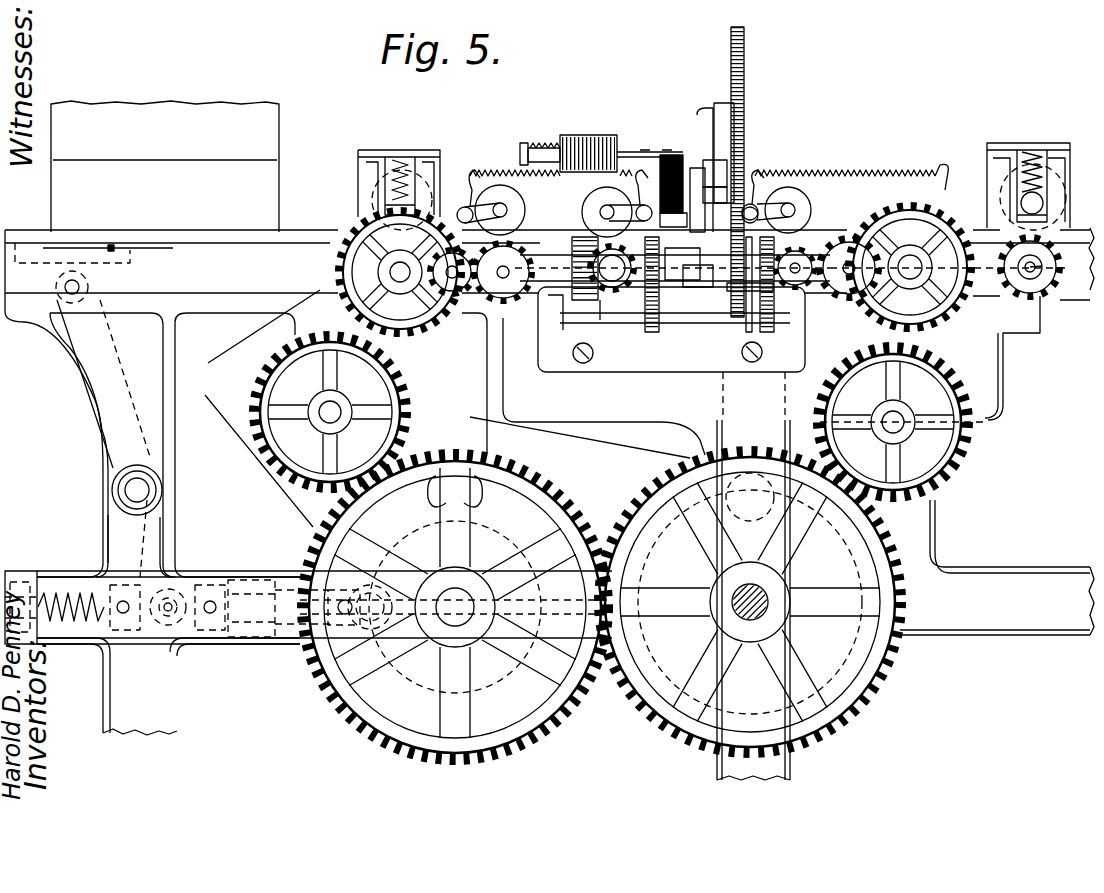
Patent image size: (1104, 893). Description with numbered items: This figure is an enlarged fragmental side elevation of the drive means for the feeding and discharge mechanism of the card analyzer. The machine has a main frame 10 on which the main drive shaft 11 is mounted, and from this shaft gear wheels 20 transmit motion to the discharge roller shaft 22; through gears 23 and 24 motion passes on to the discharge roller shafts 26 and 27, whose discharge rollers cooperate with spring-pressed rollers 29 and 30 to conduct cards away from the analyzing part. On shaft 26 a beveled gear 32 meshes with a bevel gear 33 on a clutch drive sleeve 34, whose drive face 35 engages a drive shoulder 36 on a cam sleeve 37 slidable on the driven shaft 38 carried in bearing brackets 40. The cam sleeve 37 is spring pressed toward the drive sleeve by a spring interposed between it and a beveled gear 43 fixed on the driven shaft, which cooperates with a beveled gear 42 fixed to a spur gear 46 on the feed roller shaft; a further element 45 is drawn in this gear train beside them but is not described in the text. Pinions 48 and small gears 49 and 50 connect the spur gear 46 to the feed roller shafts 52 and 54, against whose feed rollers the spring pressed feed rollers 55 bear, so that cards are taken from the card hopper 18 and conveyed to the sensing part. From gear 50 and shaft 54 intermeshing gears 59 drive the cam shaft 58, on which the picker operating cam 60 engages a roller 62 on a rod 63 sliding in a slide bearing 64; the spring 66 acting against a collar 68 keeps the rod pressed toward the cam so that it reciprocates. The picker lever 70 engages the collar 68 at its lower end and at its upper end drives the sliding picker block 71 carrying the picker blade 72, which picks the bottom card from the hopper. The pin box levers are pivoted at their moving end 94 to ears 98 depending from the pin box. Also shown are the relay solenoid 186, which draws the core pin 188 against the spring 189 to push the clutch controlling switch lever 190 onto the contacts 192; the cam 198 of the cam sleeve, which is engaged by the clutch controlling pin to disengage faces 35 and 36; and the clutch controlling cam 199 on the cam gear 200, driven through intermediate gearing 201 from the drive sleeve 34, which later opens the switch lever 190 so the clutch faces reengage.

The main frame 10 is at (1040, 625).
The main drive shaft 11 is at (770, 602).
The card hopper 18 is at (272, 128).
The gear wheels 20 is at (960, 398).
The discharge roller shaft 22 is at (910, 267).
The gears 23 is at (1052, 356).
The gears 24 is at (805, 248).
The discharge roller shaft 26 is at (810, 243).
The discharge roller shaft 27 is at (1042, 266).
The spring-pressed roller 29 is at (1060, 190).
The spring-pressed roller 30 is at (792, 200).
The beveled gear 32 is at (812, 300).
The bevel gear 33 is at (778, 375).
The clutch drive sleeve 34 is at (738, 300).
The drive face 35 is at (690, 300).
The drive shoulder 36 is at (650, 330).
The cam sleeve 37 is at (655, 330).
The driven shaft 38 is at (690, 265).
The bearing brackets 40 is at (530, 255).
The beveled gear 42 is at (612, 300).
The beveled gear 43 is at (578, 300).
The bevel gear 45 is at (589, 279).
The spur gear 46 is at (615, 283).
The pinions 48 is at (465, 207).
The small gear 49 is at (455, 292).
The small gear 50 is at (410, 300).
The feed roller shaft 52 is at (505, 280).
The feed roller shaft 54 is at (390, 272).
The feed rollers 55 is at (372, 190).
The cam shaft 58 is at (455, 607).
The intermeshing gears 59 is at (245, 385).
The picker operating cam 60 is at (410, 700).
The roller 62 is at (372, 580).
The rod 63 is at (296, 630).
The slide bearing 64 is at (240, 630).
The spring 66 is at (22, 585).
The collar 68 is at (128, 628).
The picker lever 70 is at (90, 412).
The sliding picker block 71 is at (38, 258).
The picker blade 72 is at (112, 250).
The moving end 94 is at (735, 518).
The ears 98 is at (705, 430).
The relay solenoid 186 is at (595, 135).
The core pin 188 is at (566, 135).
The spring 189 is at (535, 143).
The clutch controlling switch lever 190 is at (637, 152).
The contacts 192 is at (668, 155).
The cam 198 is at (622, 300).
The clutch controlling cam 199 is at (720, 106).
The cam gear 200 is at (746, 75).
The intermediate gearing 201 is at (752, 205).